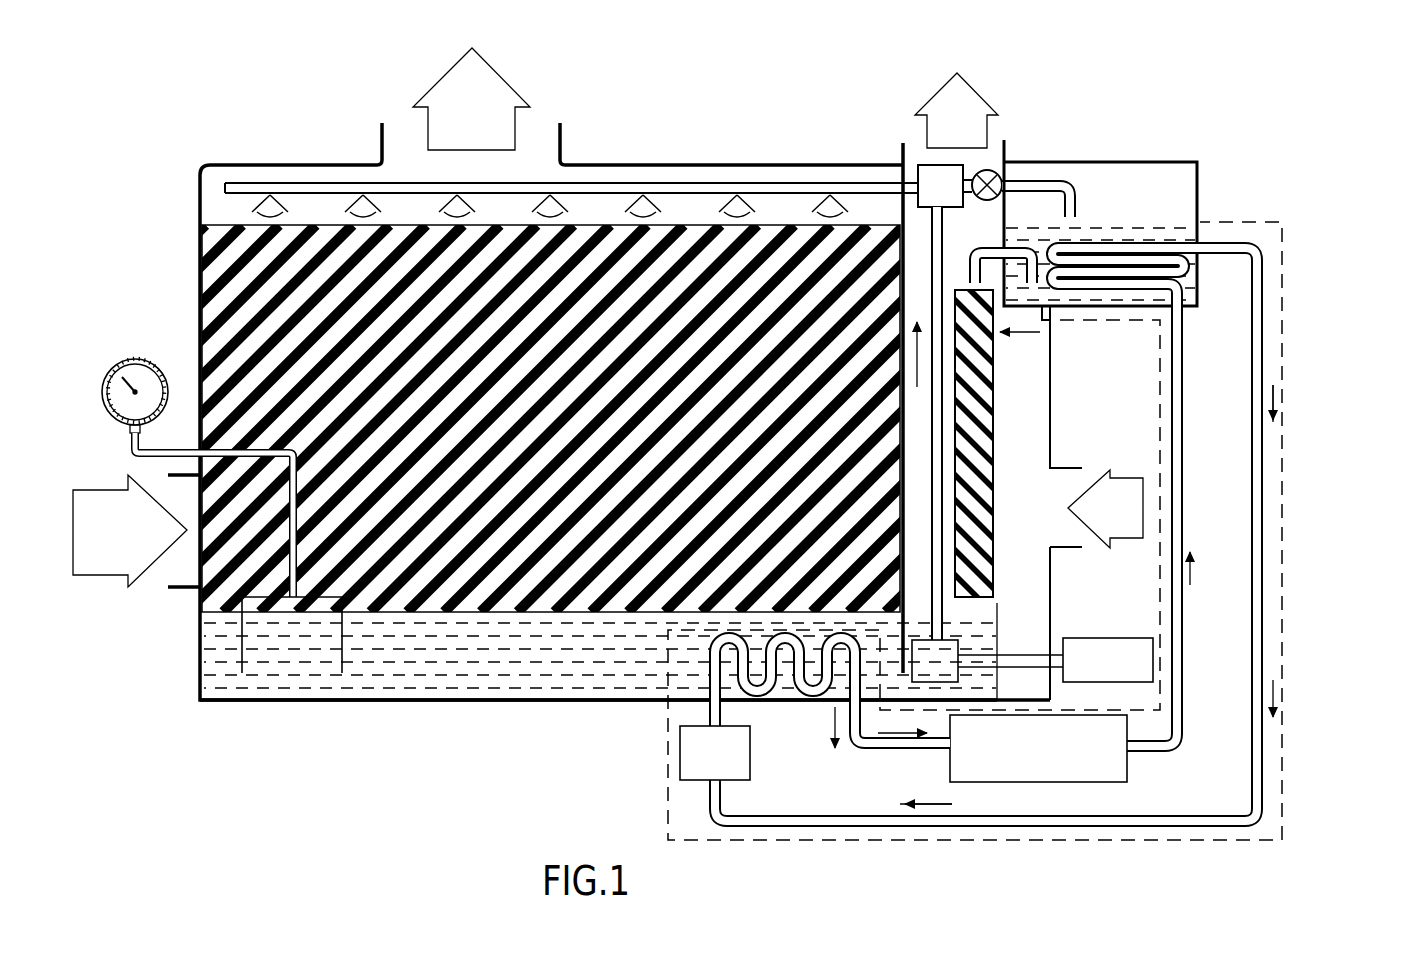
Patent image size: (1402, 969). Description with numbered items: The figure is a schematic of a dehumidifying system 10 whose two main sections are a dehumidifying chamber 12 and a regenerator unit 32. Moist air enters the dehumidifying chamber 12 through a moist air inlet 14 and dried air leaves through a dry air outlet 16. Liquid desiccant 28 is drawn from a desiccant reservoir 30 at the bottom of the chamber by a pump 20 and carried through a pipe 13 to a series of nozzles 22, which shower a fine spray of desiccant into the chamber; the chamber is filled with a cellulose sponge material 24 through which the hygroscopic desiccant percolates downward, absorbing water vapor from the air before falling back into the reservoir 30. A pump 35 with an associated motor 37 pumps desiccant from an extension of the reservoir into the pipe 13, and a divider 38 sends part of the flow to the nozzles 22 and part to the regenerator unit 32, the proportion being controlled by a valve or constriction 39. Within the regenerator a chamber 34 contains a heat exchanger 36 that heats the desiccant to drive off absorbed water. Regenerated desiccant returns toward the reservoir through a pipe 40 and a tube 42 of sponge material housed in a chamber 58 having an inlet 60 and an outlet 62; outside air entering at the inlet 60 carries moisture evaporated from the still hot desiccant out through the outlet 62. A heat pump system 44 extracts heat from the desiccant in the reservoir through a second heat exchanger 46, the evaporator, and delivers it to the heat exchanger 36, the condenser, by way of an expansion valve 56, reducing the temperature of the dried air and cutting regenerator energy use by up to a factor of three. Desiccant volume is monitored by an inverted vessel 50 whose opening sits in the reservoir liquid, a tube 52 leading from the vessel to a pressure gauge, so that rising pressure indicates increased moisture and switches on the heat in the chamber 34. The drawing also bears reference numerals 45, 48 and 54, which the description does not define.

The dehumidifying system 10 is at (222, 120).
The dehumidifying chamber 12 is at (202, 248).
The pipe 13 is at (933, 530).
The moist air inlet 14 is at (183, 590).
The dry air outlet 16 is at (562, 145).
The pump 20 is at (933, 667).
The nozzles 22 is at (828, 200).
The cellulose sponge material 24 is at (563, 437).
The desiccant 28 is at (565, 672).
The desiccant reservoir 30 is at (360, 703).
The regenerator unit 32 is at (1178, 135).
The chamber 34 is at (1143, 185).
The pump 35 is at (950, 640).
The heat exchanger 36 is at (1148, 238).
The motor 37 is at (1100, 638).
The divider 38 is at (925, 165).
The valve or constriction 39 is at (990, 170).
The pipe 40 is at (1003, 250).
The tube of sponge material 42 is at (985, 440).
The heat pump system 44 is at (1330, 367).
The refrigerant conduit 45 is at (1290, 268).
The second heat exchanger 46 is at (763, 685).
The compressor 48 is at (1128, 770).
The inverted vessel 50 is at (240, 620).
The tube 52 is at (295, 527).
The pressure gauge 54 is at (130, 362).
The expansion valve 56 is at (680, 747).
The chamber 58 is at (1055, 398).
The inlet 60 is at (1076, 465).
The outlet 62 is at (1006, 150).